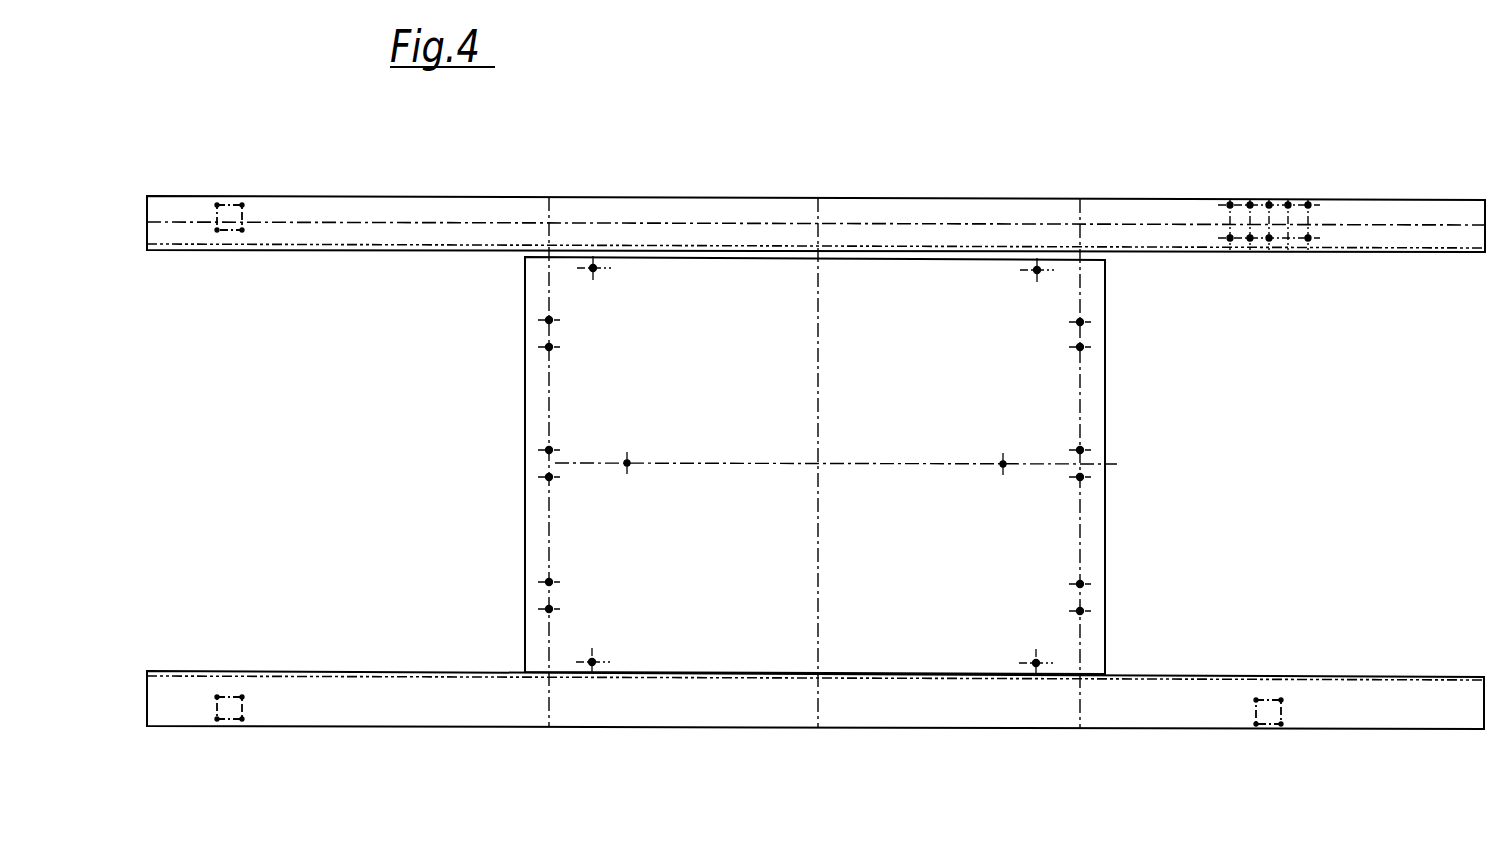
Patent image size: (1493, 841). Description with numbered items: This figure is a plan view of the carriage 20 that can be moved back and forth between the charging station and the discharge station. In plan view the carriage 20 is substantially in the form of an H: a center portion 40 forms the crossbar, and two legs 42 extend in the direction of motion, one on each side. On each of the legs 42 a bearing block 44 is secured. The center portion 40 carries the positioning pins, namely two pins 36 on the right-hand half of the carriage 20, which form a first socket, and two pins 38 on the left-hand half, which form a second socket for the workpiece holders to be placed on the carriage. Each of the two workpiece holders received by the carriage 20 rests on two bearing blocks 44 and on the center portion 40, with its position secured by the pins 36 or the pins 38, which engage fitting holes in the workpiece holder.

The carriage 20 is at (930, 199).
The pins 36 is at (1038, 268).
The pins 38 is at (593, 266).
The center portion 40 is at (728, 278).
The legs 42 is at (321, 205).
The bearing block 44 is at (226, 210).